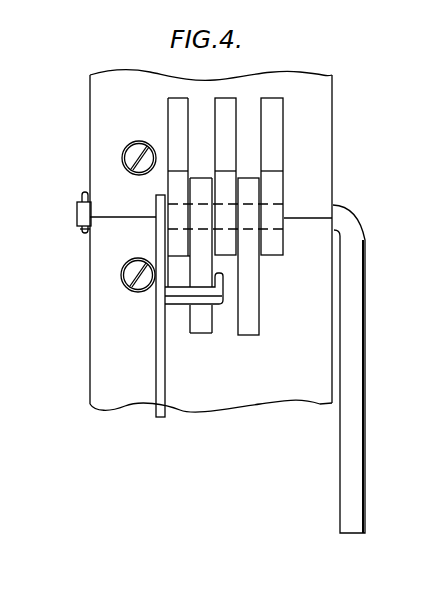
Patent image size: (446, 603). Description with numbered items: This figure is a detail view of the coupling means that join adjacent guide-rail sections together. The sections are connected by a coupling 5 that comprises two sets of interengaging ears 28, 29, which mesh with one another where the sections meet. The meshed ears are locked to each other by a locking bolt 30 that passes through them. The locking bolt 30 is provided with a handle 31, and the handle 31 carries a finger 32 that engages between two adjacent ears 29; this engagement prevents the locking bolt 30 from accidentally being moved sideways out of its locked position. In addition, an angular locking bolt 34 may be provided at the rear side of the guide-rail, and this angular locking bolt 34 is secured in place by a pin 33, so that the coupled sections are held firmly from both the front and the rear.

The coupling 5 is at (298, 139).
The ear 28 is at (278, 182).
The ear 29 is at (203, 268).
The locking bolt 30 is at (278, 217).
The handle 31 is at (160, 328).
The finger 32 is at (183, 300).
The pin 33 is at (76, 210).
The angular locking bolt 34 is at (350, 232).